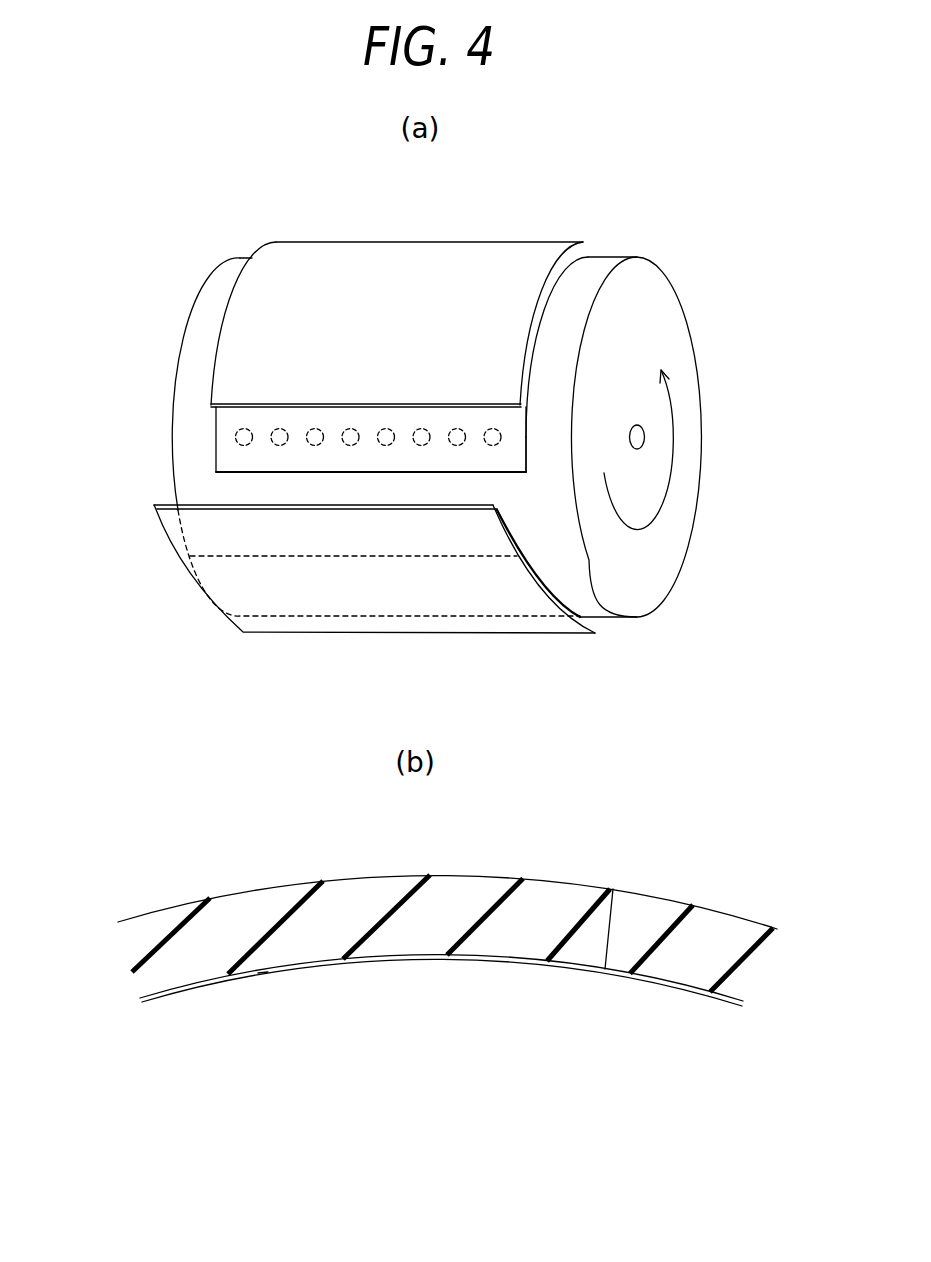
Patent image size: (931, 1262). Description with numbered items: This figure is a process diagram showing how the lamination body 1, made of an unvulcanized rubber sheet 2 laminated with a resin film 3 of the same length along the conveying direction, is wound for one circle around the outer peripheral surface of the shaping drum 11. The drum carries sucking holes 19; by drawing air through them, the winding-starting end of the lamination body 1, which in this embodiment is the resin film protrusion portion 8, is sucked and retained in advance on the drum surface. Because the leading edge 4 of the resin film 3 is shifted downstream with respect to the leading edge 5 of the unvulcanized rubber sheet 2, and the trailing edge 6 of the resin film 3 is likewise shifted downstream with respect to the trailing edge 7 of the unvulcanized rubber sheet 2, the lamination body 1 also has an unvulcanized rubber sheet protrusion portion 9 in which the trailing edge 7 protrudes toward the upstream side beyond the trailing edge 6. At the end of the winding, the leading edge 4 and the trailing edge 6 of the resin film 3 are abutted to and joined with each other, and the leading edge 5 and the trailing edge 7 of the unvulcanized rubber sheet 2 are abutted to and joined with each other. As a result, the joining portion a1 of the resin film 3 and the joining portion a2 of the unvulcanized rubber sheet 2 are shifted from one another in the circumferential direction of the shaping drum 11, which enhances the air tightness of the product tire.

The lamination body 1 is at (500, 220).
The unvulcanized rubber sheet 2 is at (595, 250).
The resin film 3 is at (223, 458).
The leading edge of the resin film 4 is at (522, 475).
The leading edge of the unvulcanized rubber sheet 5 is at (520, 408).
The trailing edge of the resin film 6 is at (224, 555).
The trailing edge of the unvulcanized rubber sheet 7 is at (464, 500).
The resin film protrusion portion 8 is at (513, 458).
The unvulcanized rubber sheet protrusion portion 9 is at (177, 532).
The shaping drum 11 is at (678, 295).
The sucking holes 19 is at (237, 432).
The joining portion of the resin film a1 is at (263, 976).
The joining portion of the unvulcanized rubber sheet a2 is at (614, 889).